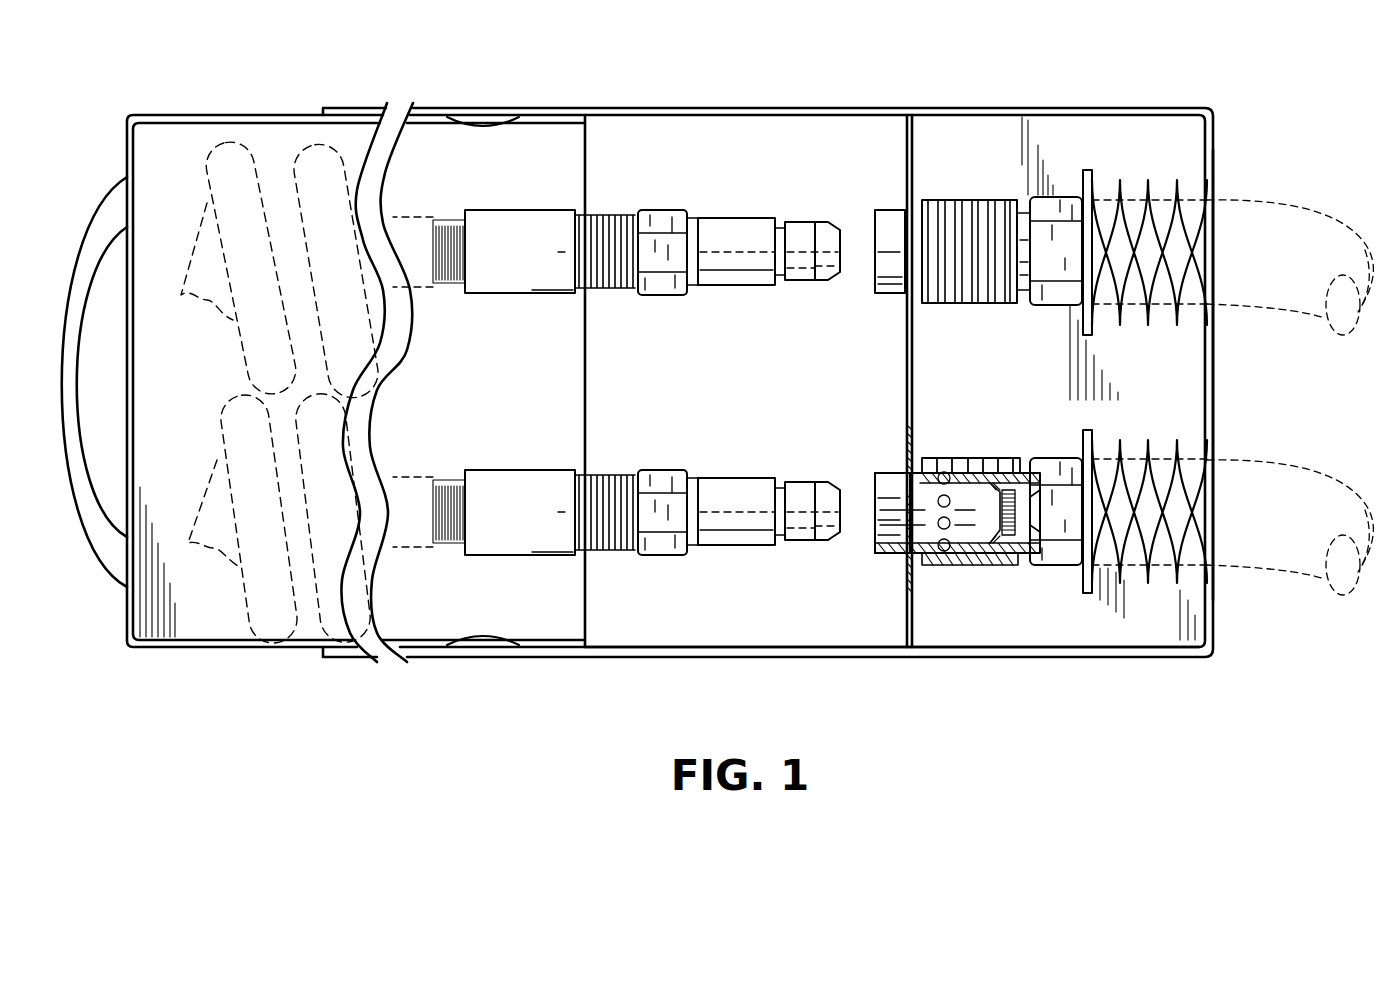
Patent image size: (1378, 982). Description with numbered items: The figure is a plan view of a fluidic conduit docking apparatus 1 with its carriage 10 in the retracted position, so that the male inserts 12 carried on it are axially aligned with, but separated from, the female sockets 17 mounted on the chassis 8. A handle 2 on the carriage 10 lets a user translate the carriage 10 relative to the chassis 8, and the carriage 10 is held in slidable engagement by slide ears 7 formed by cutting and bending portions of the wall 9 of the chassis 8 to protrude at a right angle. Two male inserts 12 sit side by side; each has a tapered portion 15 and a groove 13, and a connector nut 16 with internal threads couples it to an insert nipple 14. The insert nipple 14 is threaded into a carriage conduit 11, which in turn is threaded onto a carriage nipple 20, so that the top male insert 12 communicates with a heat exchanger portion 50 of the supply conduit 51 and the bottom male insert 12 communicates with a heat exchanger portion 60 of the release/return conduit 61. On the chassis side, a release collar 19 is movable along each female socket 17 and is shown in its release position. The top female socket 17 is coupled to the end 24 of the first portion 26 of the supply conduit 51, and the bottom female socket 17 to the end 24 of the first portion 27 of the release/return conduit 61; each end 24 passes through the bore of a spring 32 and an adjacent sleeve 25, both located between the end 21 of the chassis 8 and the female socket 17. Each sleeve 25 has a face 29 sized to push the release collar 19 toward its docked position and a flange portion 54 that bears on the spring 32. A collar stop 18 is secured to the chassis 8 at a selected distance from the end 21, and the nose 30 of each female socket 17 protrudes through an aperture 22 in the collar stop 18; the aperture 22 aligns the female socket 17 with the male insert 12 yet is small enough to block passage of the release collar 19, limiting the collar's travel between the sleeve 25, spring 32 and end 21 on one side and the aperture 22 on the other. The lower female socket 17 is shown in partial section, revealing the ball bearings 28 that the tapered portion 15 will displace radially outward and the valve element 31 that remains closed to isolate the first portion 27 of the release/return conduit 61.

The tool assembly 1 is at (590, 0).
The handle 2 is at (100, 186).
The slide ears 7 is at (485, 125).
The chassis 8 is at (692, 658).
The wall 9 is at (605, 658).
The carriage 10 is at (437, 143).
The carriage conduit 11 is at (520, 251).
The male insert 12 is at (736, 251).
The groove 13 is at (780, 286).
The insert nipple 14 is at (600, 290).
The tapered portion 15 is at (820, 222).
The connector nut 16 is at (653, 208).
The female socket 17 is at (880, 210).
The collar stop 18 is at (912, 325).
The release collar 19 is at (943, 200).
The carriage nipple 20 is at (452, 295).
The end of the chassis 21 is at (1213, 147).
The aperture 22 is at (893, 304).
The end of first portion of conduit 24 is at (1105, 200).
The sleeve 25 is at (1056, 251).
The first portion of the supply conduit 26 is at (1282, 193).
The first portion of the release/return conduit 27 is at (1284, 453).
The ball bearings 28 is at (945, 566).
The face 29 is at (1035, 197).
The nose 30 is at (876, 291).
The valve element 31 is at (990, 480).
The spring 32 is at (1148, 330).
The heat exchanger portion of the supply conduit 50 is at (237, 173).
The supply conduit 51 is at (1318, 207).
The flange portion 54 is at (1088, 170).
The heat exchanger portion of the release/return conduit 60 is at (279, 608).
The release/return conduit 61 is at (1318, 464).